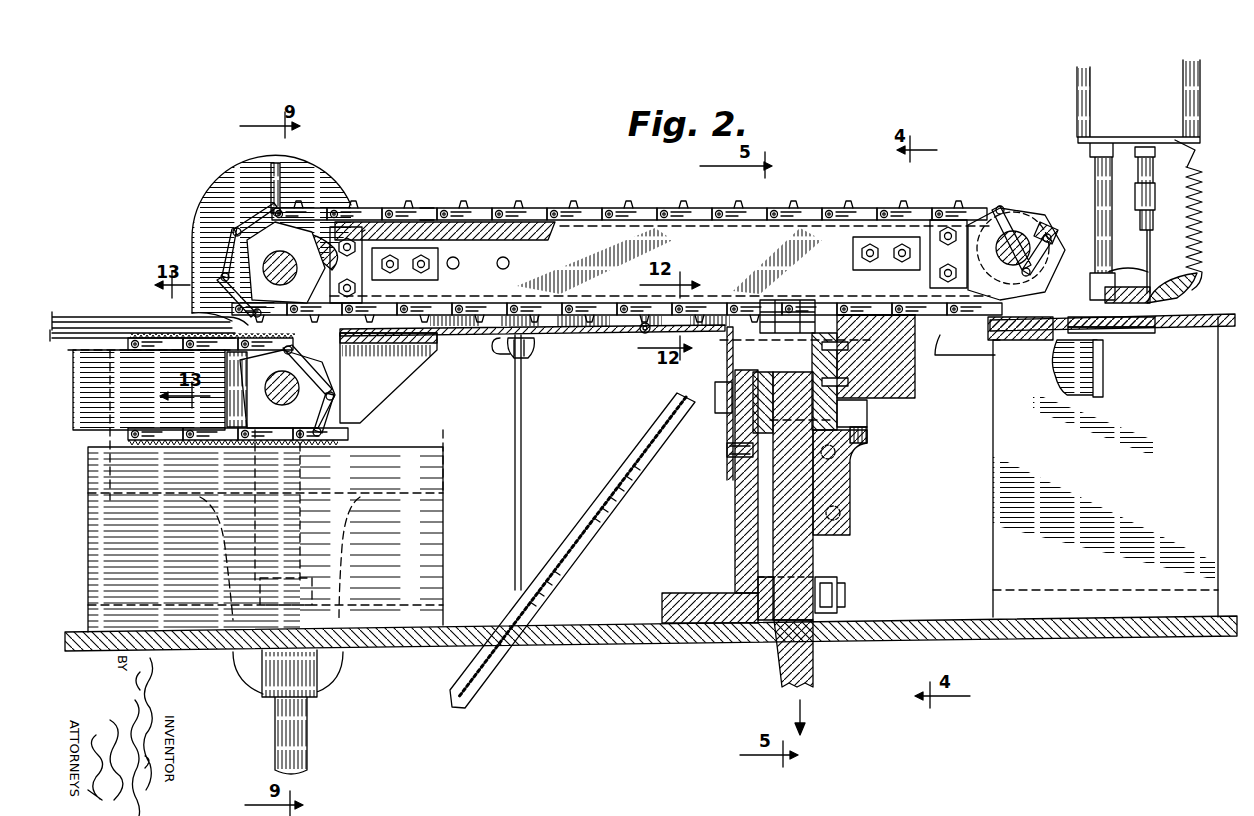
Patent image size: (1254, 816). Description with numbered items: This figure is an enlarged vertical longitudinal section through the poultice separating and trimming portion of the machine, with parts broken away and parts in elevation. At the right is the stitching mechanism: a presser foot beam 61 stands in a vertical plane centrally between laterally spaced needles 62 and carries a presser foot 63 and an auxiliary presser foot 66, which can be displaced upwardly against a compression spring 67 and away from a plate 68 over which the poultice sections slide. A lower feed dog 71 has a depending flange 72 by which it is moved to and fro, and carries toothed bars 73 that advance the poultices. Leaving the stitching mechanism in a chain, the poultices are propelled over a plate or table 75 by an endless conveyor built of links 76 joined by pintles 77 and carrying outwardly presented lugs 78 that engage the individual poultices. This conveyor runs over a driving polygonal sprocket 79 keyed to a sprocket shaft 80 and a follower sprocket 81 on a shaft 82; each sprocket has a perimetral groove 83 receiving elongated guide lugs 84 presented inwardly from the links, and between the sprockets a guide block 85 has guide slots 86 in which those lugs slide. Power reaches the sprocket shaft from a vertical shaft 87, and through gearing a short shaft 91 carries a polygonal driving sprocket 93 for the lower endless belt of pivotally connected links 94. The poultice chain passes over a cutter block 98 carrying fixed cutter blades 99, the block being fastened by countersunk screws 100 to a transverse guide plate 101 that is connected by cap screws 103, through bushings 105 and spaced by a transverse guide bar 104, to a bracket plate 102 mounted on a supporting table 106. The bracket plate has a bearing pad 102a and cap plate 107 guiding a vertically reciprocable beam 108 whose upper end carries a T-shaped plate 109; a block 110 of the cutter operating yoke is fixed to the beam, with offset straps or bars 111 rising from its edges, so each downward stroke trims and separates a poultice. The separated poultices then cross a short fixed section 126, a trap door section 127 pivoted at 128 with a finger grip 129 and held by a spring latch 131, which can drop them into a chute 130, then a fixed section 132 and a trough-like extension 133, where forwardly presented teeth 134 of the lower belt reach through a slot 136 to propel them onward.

The presser foot beam 61 is at (1097, 165).
The needles 62 is at (1152, 254).
The presser foot 63 is at (1120, 287).
The auxiliary presser foot 66 is at (1162, 289).
The compression spring 67 is at (1190, 186).
The plate 68 is at (1032, 330).
The lower feed dog 71 is at (1120, 334).
The depending flange 72 is at (1103, 362).
The toothed bars 73 is at (1144, 325).
The plate or table 75 is at (978, 336).
The links 76 is at (480, 208).
The pintles 77 is at (723, 302).
The lugs 78 is at (398, 210).
The driving polygonal sprocket 79 is at (238, 290).
The sprocket shaft 80 is at (268, 250).
The follower sprocket 81 is at (1025, 238).
The shaft 82 is at (1003, 206).
The perimetral groove 83 is at (317, 233).
The guide lugs 84 is at (410, 207).
The guide block 85 is at (624, 233).
The guide slots or grooves 86 is at (492, 207).
The vertical shaft 87 is at (307, 729).
The short shaft 91 is at (340, 388).
The polygonal driving sprocket 93 is at (334, 402).
The links 94 is at (146, 431).
The cutter block 98 is at (905, 369).
The fixed cutter blades 99 is at (900, 326).
The countersunk screws 100 is at (845, 390).
The transverse plate or guide 101 is at (866, 420).
The transverse supporting plate or bracket 102 is at (736, 508).
The bearing pad 102a is at (770, 620).
The cap screws 103 is at (720, 412).
The transverse guide bar 104 is at (758, 370).
The bushings 105 is at (785, 385).
The supporting plate or table 106 is at (596, 646).
The cap plate 107 is at (837, 580).
The vertically reciprocable beam 108 is at (807, 551).
The T-shaped plate 109 is at (866, 441).
The block 110 is at (839, 495).
The straps or bars 111 is at (850, 450).
The short fixed section 126 is at (726, 339).
The trap door section 127 is at (588, 334).
The pivot 128 is at (640, 349).
The finger grip 129 is at (526, 358).
The chute 130 is at (634, 463).
The spring latch 131 is at (501, 356).
The fixed section 132 is at (410, 356).
The trough-like extension 133 is at (92, 315).
The teeth 134 is at (148, 333).
The slot 136 is at (70, 329).